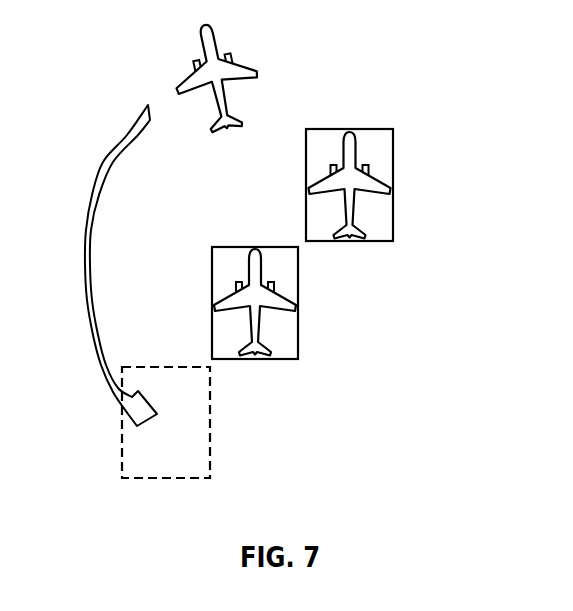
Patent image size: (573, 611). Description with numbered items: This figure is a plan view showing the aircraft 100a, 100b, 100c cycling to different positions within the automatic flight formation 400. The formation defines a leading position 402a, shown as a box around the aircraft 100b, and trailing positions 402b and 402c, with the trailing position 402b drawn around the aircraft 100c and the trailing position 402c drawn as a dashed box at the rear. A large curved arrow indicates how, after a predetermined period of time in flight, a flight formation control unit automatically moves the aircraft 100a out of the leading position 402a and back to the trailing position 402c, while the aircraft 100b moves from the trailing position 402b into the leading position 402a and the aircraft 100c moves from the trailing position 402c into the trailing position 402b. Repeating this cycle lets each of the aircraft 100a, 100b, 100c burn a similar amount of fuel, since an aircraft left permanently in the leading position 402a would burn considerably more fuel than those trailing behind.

The automatic flight formation 400 is at (123, 82).
The aircraft 100a is at (216, 46).
The aircraft 100b is at (355, 152).
The aircraft 100c is at (262, 273).
The leading position 402a is at (393, 203).
The trailing position 402b is at (298, 337).
The trailing position 402c is at (210, 403).